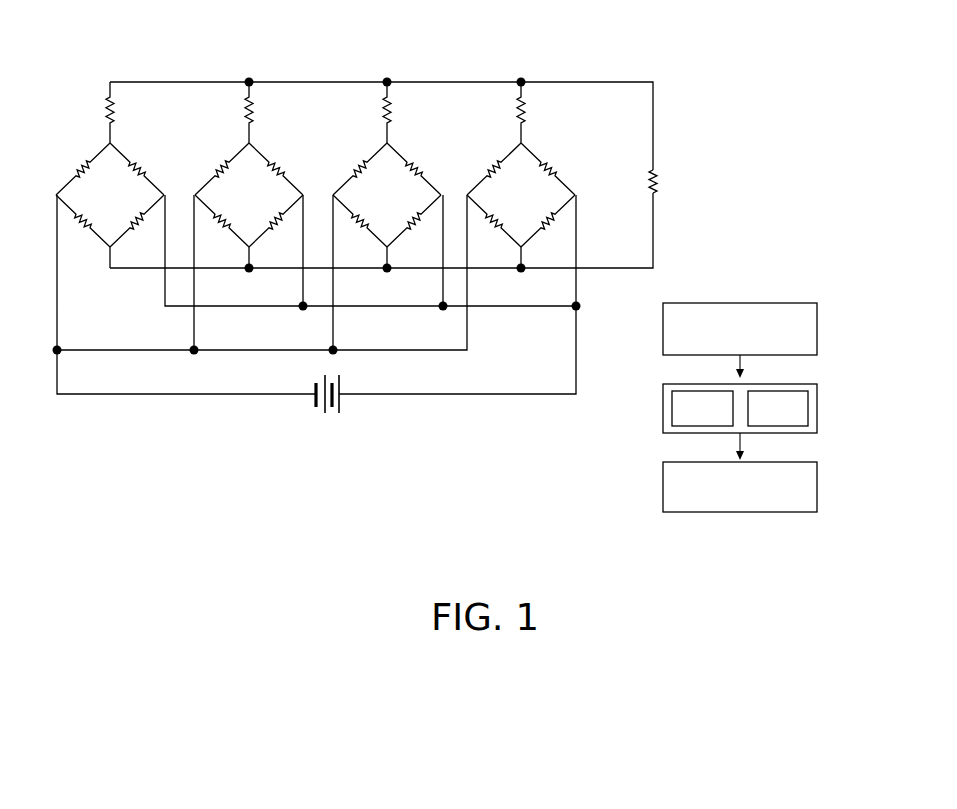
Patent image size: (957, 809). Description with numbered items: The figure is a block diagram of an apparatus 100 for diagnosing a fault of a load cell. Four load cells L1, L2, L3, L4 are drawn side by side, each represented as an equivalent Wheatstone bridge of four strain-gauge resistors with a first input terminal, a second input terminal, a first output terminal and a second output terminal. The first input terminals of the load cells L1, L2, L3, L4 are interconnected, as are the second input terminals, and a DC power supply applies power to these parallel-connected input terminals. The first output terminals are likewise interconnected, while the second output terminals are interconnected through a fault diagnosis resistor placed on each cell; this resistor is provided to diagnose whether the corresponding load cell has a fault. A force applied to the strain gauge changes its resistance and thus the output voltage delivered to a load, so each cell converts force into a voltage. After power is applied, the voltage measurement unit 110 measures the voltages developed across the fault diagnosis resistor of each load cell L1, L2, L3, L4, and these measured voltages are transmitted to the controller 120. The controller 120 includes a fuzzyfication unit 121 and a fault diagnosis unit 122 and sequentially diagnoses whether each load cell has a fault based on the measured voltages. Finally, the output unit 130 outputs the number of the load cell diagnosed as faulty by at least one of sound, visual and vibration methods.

The apparatus for diagnosing a fault of a load cell 100 is at (77, 34).
The load cell L1 is at (148, 37).
The load cell L2 is at (290, 48).
The load cell L3 is at (431, 56).
The load cell L4 is at (562, 64).
The voltage measurement unit 110 is at (740, 329).
The controller 120 is at (777, 408).
The fuzzyfication unit 121 is at (702, 408).
The fault diagnosis unit 122 is at (778, 408).
The output unit 130 is at (740, 487).